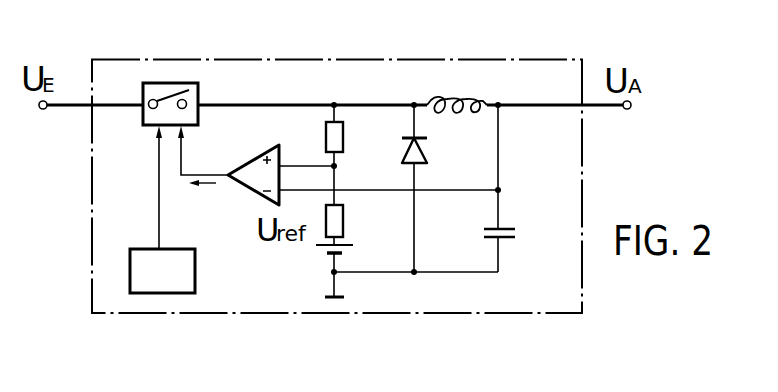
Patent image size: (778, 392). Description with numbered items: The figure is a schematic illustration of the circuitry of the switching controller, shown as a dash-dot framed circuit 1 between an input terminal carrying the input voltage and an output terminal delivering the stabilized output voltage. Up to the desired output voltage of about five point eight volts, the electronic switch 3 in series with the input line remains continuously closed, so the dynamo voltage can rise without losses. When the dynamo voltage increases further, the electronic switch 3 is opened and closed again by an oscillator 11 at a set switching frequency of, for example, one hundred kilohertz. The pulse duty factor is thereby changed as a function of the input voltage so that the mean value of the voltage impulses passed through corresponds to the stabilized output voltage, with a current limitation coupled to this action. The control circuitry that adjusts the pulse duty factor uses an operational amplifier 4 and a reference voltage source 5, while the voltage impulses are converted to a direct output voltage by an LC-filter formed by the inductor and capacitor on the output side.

The switching regulator circuit 1 is at (340, 59).
The electronic switch 3 is at (173, 82).
The operational amplifier 4 is at (259, 150).
The reference voltage source 5 is at (322, 253).
The oscillator 11 is at (129, 273).